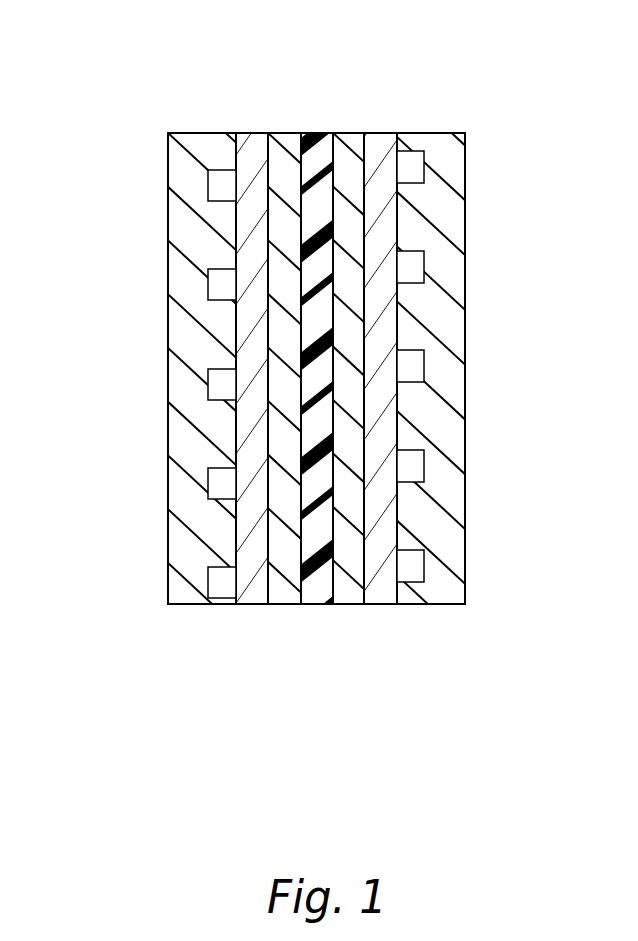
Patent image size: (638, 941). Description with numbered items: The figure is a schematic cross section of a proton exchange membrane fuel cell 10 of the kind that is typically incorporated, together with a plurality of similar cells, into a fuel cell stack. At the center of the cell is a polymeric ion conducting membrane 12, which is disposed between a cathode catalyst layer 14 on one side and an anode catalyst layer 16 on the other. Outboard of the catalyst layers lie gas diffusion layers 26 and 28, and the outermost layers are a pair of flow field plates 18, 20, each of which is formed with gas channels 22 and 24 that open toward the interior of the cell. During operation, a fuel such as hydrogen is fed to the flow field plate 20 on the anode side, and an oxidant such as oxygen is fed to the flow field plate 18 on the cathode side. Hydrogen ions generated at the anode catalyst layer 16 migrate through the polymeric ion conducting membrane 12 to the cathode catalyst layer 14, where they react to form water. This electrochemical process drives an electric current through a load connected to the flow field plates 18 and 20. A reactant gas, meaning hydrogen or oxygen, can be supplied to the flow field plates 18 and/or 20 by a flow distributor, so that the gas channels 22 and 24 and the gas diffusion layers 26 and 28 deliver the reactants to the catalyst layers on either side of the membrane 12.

The proton exchange membrane fuel cell 10 is at (96, 135).
The polymeric ion conducting membrane 12 is at (324, 133).
The cathode catalyst layer 14 is at (345, 134).
The anode catalyst layer 16 is at (290, 135).
The flow field plate 18 is at (423, 134).
The flow field plate 20 is at (201, 137).
The gas channel 22 is at (413, 363).
The gas channel 24 is at (222, 380).
The gas diffusion layer 26 is at (382, 134).
The gas diffusion layer 28 is at (258, 134).